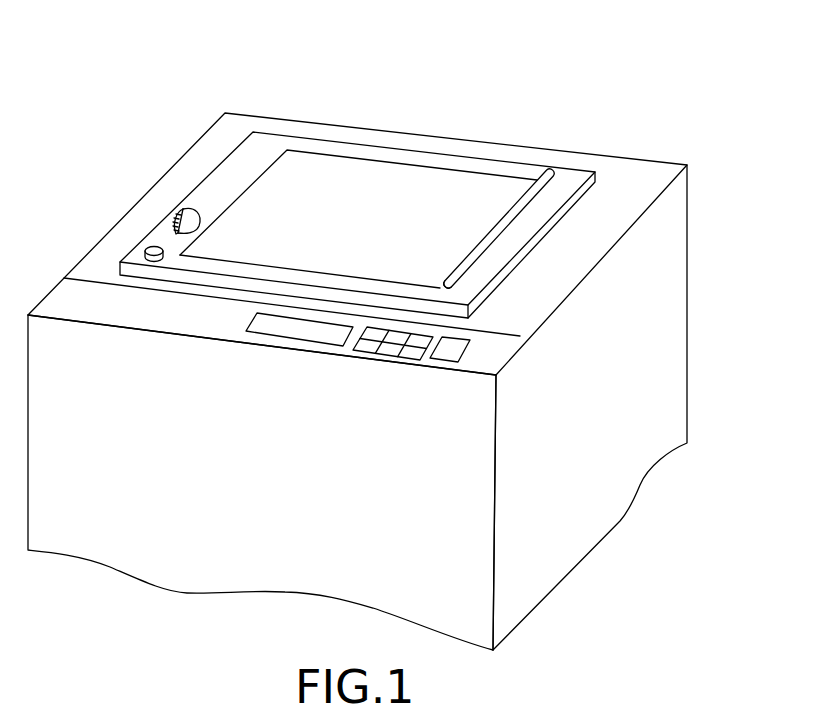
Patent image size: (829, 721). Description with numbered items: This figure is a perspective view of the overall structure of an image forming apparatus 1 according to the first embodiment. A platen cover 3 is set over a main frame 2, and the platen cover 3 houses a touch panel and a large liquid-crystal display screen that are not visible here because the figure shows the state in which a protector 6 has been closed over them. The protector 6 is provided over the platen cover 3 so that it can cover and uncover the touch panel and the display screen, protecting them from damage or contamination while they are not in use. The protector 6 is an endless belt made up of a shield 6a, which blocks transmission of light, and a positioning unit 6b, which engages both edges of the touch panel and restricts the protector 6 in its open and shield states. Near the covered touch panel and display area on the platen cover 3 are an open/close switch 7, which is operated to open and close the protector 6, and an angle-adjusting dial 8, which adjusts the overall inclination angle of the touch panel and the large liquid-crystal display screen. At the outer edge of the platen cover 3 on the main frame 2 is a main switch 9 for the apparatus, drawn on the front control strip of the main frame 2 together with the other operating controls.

The image forming apparatus 1 is at (401, 325).
The main frame 2 is at (672, 305).
The platen cover 3 is at (567, 180).
The protector 6 is at (367, 144).
The shield 6a is at (390, 175).
The positioning unit 6b is at (522, 192).
The open/close switch 7 is at (150, 247).
The angle-adjusting dial 8 is at (185, 210).
The main switch 9 is at (318, 332).